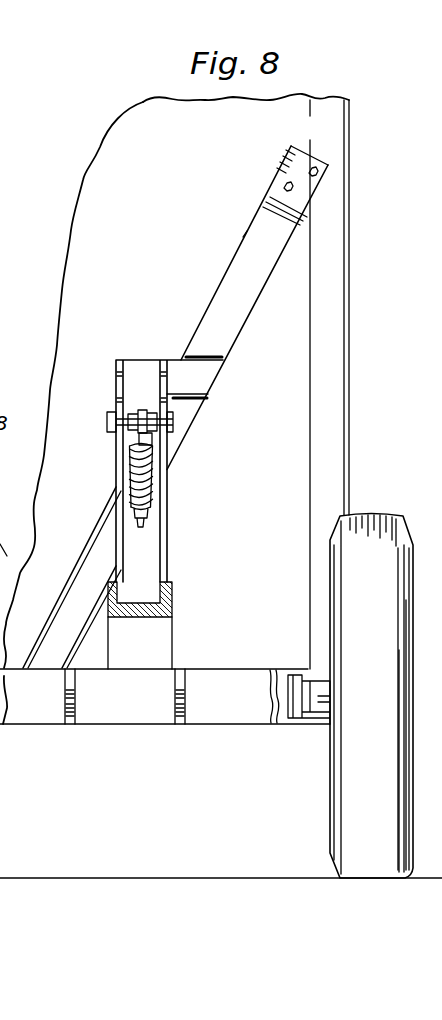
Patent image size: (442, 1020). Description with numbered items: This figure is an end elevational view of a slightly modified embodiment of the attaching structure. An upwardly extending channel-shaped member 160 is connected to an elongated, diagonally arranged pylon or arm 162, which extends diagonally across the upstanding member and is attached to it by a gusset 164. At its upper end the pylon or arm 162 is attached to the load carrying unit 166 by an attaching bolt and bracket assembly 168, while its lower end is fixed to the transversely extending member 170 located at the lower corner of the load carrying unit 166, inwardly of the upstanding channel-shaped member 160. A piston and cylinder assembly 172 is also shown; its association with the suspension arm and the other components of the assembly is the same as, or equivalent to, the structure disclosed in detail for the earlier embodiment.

The channel-shaped member 160 is at (135, 372).
The pylon or arm 162 is at (232, 327).
The gusset 164 is at (190, 405).
The load carrying unit 166 is at (340, 187).
The attaching bolt and bracket assembly 168 is at (313, 167).
The transversely extending member 170 is at (42, 693).
The piston and cylinder assembly 172 is at (148, 510).